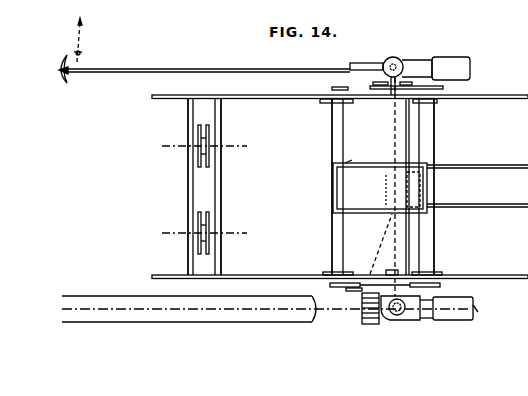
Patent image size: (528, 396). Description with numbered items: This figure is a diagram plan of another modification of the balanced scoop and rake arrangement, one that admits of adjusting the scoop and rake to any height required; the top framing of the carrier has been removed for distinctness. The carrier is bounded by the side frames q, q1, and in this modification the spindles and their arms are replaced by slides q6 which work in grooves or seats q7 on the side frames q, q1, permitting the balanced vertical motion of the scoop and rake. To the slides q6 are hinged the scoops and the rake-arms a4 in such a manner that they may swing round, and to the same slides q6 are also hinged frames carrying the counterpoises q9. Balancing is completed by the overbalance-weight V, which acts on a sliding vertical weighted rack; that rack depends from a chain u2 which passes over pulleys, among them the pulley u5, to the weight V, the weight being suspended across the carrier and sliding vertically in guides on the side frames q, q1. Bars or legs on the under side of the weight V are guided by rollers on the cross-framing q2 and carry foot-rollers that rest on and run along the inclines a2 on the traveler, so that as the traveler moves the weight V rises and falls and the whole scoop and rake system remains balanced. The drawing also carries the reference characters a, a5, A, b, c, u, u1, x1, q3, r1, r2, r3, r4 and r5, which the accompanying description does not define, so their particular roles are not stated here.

The frame rail a is at (340, 181).
The inclines a2 is at (477, 201).
The rake-arms a4 is at (224, 64).
The side rail a5 is at (477, 162).
The direction arrow A is at (78, 36).
The hook b is at (69, 67).
The tube c is at (266, 309).
The overbalance-weight V is at (380, 188).
The gear u is at (370, 314).
The plate u1 is at (352, 295).
The chain u2 is at (381, 244).
The pulley u5 is at (353, 157).
The slide x1 is at (381, 190).
The side frame q is at (385, 289).
The side frame q1 is at (451, 68).
The cross-framing q2 is at (378, 269).
The cross plate q3 is at (386, 104).
The slides q6 is at (400, 304).
The grooves or seats q7 is at (446, 314).
The counterpoises q9 is at (424, 63).
The plate r1 is at (362, 98).
The support r2 is at (406, 86).
The plate r3 is at (391, 267).
The rod r4 is at (391, 187).
The pin r5 is at (478, 307).